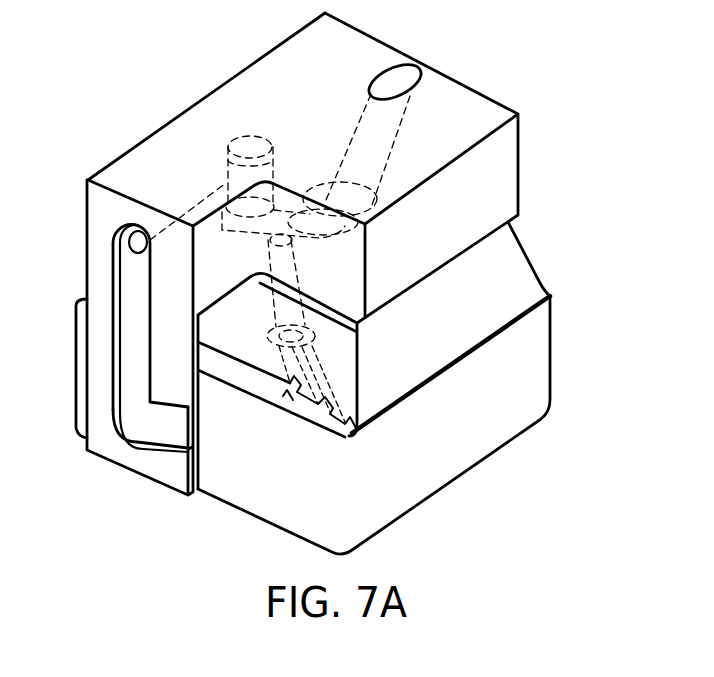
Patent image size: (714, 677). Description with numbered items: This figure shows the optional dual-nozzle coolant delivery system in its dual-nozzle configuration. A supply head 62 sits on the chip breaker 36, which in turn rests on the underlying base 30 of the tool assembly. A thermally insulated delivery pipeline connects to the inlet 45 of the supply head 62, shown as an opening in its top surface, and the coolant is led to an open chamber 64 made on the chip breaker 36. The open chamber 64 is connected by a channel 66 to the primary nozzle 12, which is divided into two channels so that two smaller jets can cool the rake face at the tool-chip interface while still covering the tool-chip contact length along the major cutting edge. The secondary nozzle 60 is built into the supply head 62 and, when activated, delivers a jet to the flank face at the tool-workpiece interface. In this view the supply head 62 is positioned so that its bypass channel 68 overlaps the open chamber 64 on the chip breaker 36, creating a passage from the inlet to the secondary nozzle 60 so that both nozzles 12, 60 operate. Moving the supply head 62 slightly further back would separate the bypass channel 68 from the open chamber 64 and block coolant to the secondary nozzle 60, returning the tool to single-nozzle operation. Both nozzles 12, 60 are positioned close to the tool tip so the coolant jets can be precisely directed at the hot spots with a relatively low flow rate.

The primary nozzle 12 is at (283, 396).
The base block 30 is at (543, 353).
The chip breaker 36 is at (519, 256).
The inlet 45 is at (412, 73).
The secondary nozzle 60 is at (167, 430).
The supply head 62 is at (513, 150).
The open chamber 64 is at (300, 186).
The channel 66 is at (266, 258).
The bypass channel 68 is at (258, 138).